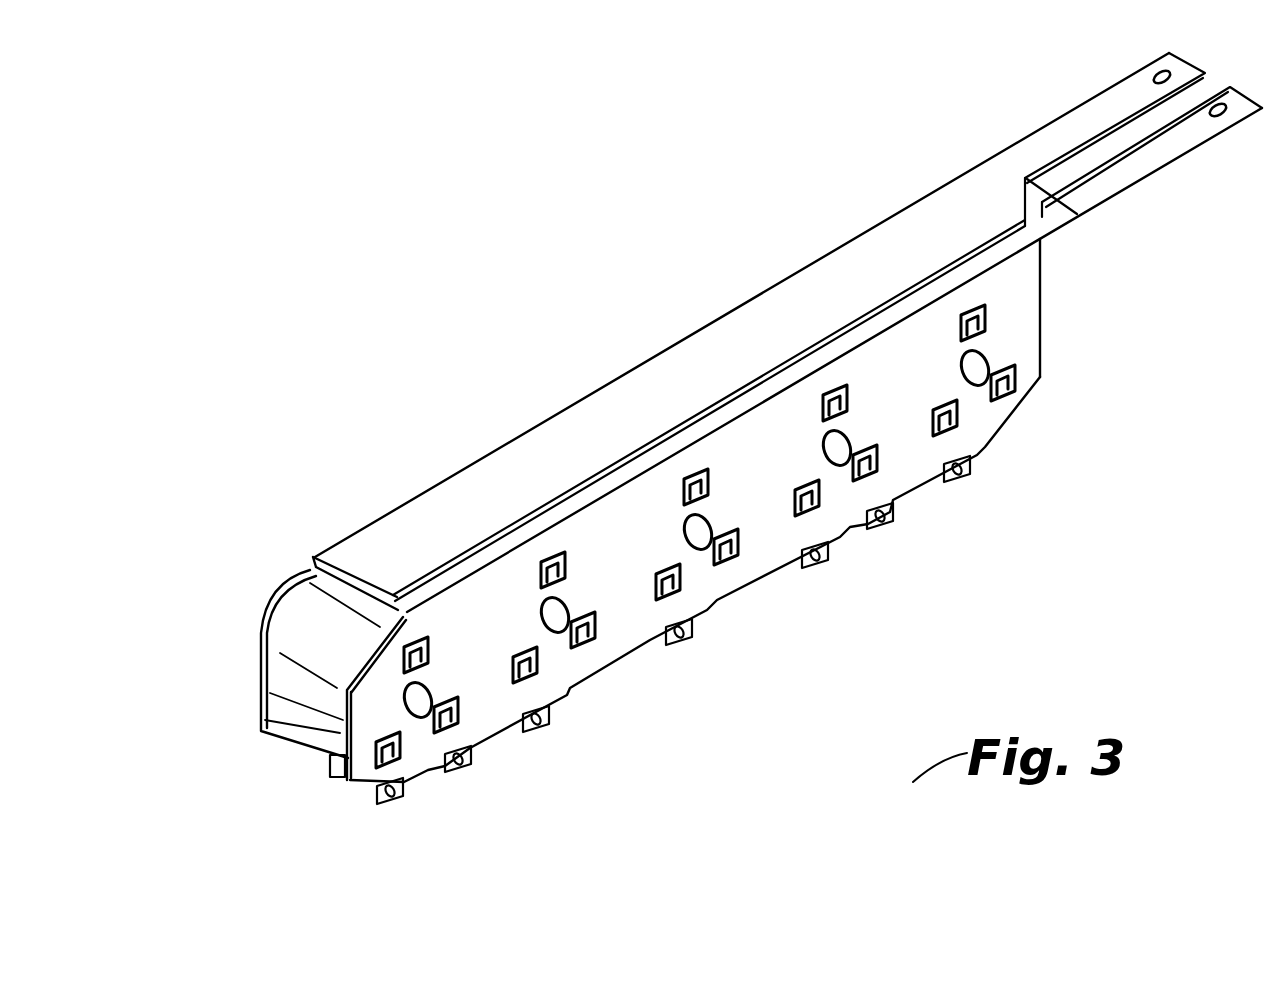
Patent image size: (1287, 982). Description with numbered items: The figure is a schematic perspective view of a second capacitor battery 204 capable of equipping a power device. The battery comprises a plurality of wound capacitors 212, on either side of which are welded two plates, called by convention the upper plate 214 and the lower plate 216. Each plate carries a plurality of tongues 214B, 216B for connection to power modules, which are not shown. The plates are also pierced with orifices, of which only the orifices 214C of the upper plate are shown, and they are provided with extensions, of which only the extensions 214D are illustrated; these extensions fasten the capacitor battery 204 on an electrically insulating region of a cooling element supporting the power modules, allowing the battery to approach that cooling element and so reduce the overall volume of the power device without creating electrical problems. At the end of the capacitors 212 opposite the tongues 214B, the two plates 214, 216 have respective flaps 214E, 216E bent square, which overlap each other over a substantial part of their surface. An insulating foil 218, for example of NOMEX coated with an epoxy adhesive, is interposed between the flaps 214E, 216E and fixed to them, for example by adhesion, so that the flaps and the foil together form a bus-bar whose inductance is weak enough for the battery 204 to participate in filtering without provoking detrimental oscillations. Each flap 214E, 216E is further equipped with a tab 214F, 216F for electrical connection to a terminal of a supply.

The capacitor battery 204 is at (590, 351).
The wound capacitors 212 is at (318, 713).
The upper plate 214 is at (1023, 327).
The tongues 214B is at (680, 653).
The orifices 214C is at (837, 473).
The extensions 214D is at (882, 527).
The flap 214E is at (1040, 245).
The tab 214F is at (1195, 135).
The lower plate 216 is at (260, 633).
The tongues 216B is at (336, 777).
The flap 216E is at (793, 303).
The tab 216F is at (1128, 102).
The insulating foil 218 is at (1043, 205).